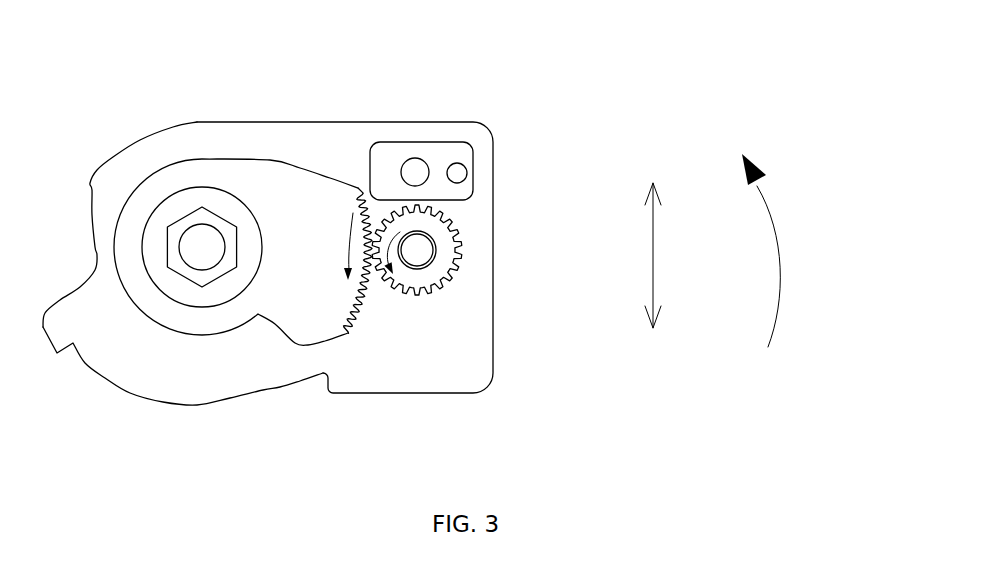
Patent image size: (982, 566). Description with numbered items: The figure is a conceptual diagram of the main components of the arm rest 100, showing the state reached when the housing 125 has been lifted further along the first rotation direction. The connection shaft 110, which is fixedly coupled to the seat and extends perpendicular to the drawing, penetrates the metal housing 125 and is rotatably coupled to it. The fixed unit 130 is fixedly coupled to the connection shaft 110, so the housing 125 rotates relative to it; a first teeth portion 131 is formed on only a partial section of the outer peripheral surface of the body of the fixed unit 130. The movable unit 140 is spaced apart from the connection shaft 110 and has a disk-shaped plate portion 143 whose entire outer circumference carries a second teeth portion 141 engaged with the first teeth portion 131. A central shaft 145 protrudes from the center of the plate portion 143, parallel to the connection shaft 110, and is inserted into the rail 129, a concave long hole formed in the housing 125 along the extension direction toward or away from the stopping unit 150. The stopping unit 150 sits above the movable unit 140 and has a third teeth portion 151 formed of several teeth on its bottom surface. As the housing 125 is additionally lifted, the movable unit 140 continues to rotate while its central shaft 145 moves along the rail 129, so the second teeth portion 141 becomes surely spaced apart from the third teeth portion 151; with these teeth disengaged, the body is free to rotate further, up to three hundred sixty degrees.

The arm rest 100 is at (556, 62).
The connection shaft 110 is at (197, 253).
The housing 125 is at (262, 128).
The rail 129 is at (416, 272).
The fixed unit 130 is at (287, 308).
The first teeth portion 131 is at (371, 303).
The movable unit 140 is at (457, 230).
The second teeth portion 141 is at (463, 247).
The plate portion 143 is at (438, 270).
The central shaft 145 is at (437, 251).
The stopping unit 150 is at (438, 148).
The third teeth portion 151 is at (467, 196).